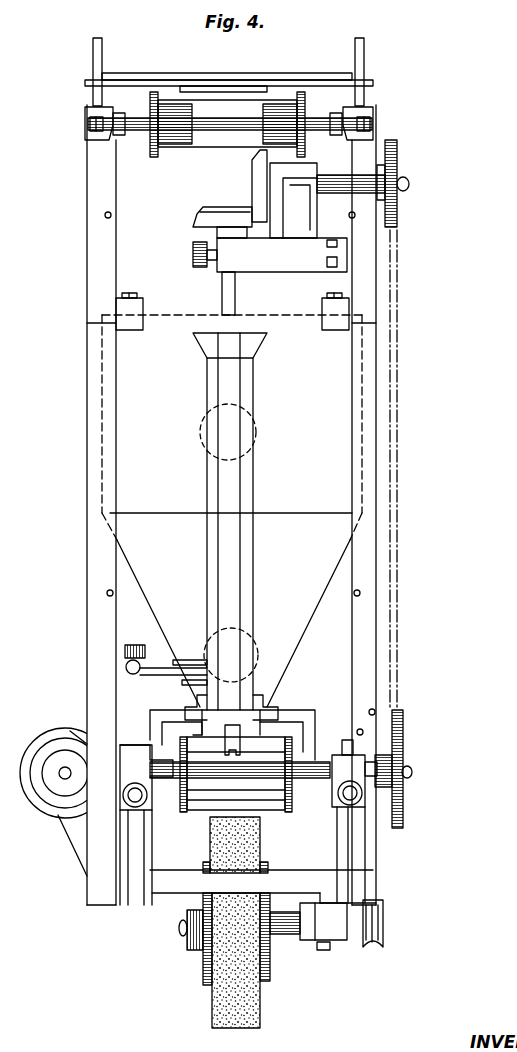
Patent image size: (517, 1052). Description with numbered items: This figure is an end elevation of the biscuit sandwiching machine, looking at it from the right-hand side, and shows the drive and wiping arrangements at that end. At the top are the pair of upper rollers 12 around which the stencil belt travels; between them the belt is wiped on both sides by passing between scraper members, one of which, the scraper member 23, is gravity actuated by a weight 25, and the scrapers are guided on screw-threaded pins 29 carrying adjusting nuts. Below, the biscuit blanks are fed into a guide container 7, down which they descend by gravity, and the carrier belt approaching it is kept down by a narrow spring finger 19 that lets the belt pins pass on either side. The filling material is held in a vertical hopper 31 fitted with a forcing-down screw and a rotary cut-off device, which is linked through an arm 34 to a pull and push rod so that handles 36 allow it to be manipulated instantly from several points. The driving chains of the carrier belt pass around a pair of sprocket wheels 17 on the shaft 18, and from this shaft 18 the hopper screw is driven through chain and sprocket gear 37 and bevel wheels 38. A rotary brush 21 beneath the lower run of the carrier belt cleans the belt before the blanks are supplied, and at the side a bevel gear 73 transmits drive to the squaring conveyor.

The pins 29 is at (102, 50).
The weight 25 is at (298, 73).
The scraper member 23 is at (371, 83).
The upper rollers 12 is at (212, 146).
The bevel wheels 38 is at (257, 185).
The chain and sprocket gear 37 is at (394, 141).
The guide container 7 is at (253, 390).
The vertical hopper 31 is at (233, 555).
The handles 36 is at (126, 666).
The arm 34 is at (158, 682).
The spring finger 19 is at (233, 724).
The bevel gear 73 is at (82, 730).
The sprocket wheels 17 is at (225, 774).
The shaft 18 is at (404, 764).
The rotary brush 21 is at (262, 818).